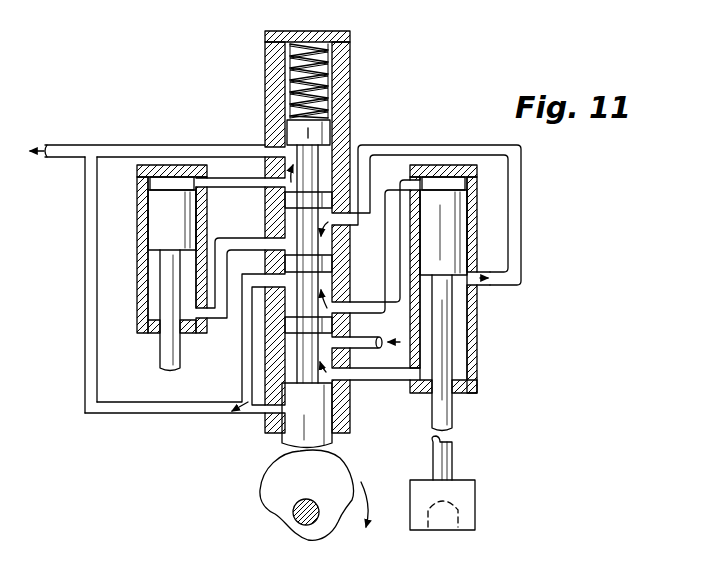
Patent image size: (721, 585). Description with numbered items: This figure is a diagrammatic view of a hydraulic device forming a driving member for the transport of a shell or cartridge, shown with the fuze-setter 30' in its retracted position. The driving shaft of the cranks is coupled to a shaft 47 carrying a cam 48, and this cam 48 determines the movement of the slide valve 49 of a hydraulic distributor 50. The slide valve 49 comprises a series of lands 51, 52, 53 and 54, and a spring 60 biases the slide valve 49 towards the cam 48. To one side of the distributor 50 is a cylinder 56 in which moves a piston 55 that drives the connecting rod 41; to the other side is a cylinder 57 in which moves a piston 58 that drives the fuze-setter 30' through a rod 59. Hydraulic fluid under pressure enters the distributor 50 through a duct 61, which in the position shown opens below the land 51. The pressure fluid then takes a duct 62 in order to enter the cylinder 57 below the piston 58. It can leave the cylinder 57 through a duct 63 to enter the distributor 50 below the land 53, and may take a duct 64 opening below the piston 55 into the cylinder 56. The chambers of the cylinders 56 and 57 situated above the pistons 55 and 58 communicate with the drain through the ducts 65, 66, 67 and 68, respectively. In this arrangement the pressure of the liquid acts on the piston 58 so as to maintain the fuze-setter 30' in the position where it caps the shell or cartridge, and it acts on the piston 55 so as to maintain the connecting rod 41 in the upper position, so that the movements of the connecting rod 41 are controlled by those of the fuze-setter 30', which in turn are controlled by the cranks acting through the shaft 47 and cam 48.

The fuze-setter 30' is at (463, 505).
The connecting rod 41 is at (160, 355).
The shaft 47 is at (300, 514).
The cam 48 is at (272, 477).
The slide valve 49 is at (307, 415).
The hydraulic distributor 50 is at (341, 260).
The land 51 is at (308, 325).
The land 52 is at (308, 263).
The land 53 is at (308, 200).
The land 54 is at (318, 130).
The piston 55 is at (172, 213).
The cylinder 56 is at (137, 266).
The cylinder 57 is at (492, 196).
The piston 58 is at (443, 226).
The rod 59 is at (453, 452).
The spring 60 is at (318, 66).
The duct 61 is at (376, 341).
The duct 62 is at (374, 381).
The duct 63 is at (522, 281).
The duct 64 is at (238, 238).
The duct 65 is at (230, 180).
The duct 66 is at (165, 146).
The duct 67 is at (386, 278).
The duct 68 is at (242, 375).